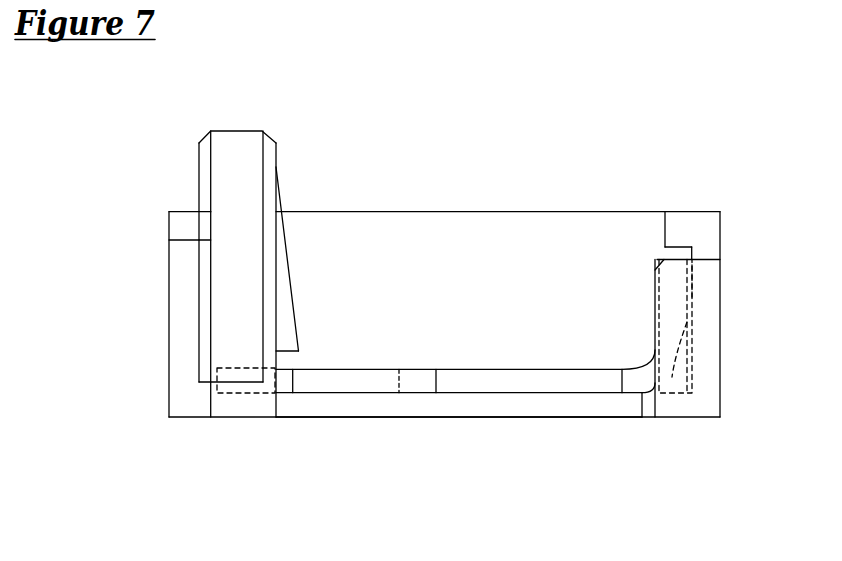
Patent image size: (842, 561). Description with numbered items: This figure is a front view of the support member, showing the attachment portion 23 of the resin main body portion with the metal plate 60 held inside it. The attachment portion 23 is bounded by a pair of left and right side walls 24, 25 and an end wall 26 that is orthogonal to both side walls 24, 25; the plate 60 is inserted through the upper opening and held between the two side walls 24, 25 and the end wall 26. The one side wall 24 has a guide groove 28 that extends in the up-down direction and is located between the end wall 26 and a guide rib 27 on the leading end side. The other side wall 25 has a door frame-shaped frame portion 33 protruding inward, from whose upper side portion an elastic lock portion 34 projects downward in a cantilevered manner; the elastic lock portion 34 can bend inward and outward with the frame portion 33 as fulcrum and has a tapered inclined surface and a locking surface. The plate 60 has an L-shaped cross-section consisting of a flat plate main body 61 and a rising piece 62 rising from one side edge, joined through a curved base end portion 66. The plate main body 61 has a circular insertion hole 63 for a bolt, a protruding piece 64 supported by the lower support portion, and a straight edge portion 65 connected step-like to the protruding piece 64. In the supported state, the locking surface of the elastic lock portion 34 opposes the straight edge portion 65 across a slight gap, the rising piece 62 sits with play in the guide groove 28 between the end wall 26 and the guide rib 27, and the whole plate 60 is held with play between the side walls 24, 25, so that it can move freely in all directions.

The attachment portion 23 is at (463, 183).
The side wall 24 is at (722, 240).
The side wall 25 is at (175, 277).
The end wall 26 is at (529, 220).
The guide rib 27 is at (665, 277).
The guide groove 28 is at (691, 297).
The frame portion 33 is at (237, 138).
The elastic lock portion 34 is at (283, 275).
The plate 60 is at (588, 390).
The plate main body 61 is at (360, 380).
The rising piece 62 is at (698, 278).
The insertion hole 63 is at (527, 380).
The protruding piece 64 is at (248, 393).
The straight edge portion 65 is at (295, 369).
The base end portion 66 is at (653, 390).